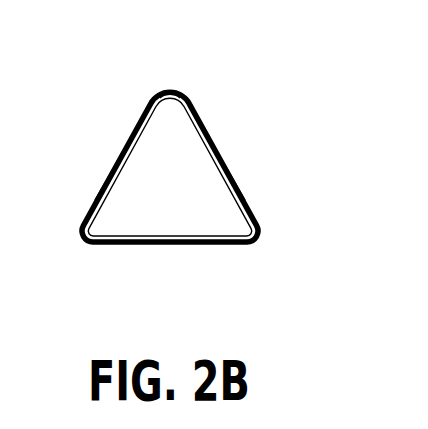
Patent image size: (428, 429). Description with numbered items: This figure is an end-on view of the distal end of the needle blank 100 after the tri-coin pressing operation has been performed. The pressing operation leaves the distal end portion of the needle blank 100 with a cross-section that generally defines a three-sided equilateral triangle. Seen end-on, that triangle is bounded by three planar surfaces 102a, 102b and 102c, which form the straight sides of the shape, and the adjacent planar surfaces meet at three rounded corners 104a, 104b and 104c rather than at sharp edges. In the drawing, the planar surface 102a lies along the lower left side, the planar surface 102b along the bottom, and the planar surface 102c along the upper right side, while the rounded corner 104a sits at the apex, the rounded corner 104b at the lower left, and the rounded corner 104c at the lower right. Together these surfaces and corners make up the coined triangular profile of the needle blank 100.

The needle blank 100 is at (258, 162).
The planar surface 102a is at (116, 170).
The planar surface 102b is at (165, 244).
The planar surface 102c is at (203, 128).
The rounded corner 104a is at (170, 93).
The rounded corner 104b is at (82, 235).
The rounded corner 104c is at (258, 237).